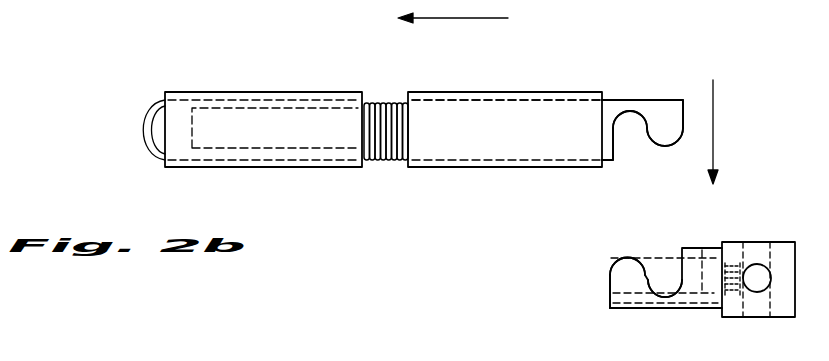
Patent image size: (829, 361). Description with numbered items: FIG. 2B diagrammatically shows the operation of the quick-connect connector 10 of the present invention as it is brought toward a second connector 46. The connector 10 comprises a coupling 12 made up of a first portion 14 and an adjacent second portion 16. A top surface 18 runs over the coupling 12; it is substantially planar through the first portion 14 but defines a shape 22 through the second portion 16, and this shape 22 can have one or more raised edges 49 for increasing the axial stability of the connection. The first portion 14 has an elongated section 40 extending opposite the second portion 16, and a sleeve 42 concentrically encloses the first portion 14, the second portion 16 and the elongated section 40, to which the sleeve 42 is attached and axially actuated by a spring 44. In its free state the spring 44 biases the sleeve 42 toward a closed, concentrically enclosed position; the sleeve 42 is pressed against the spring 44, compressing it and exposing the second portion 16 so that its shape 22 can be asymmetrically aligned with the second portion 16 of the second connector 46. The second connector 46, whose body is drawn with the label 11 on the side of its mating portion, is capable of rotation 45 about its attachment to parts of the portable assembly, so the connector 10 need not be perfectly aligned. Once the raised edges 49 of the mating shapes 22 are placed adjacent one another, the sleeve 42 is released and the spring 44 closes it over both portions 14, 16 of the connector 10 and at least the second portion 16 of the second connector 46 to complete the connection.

The connector 10 is at (644, 92).
The holder member 11 is at (625, 283).
The coupling 12 is at (673, 93).
The first portion 14 is at (560, 108).
The second portion 16 is at (611, 110).
The top surface 18 is at (645, 130).
The shape 22 is at (658, 152).
The elongated section 40 is at (457, 100).
The sleeve 42 is at (494, 114).
The spring 44 is at (380, 103).
The rotation 45 is at (600, 282).
The second connector 46 is at (631, 249).
The raised edge 49 is at (649, 273).